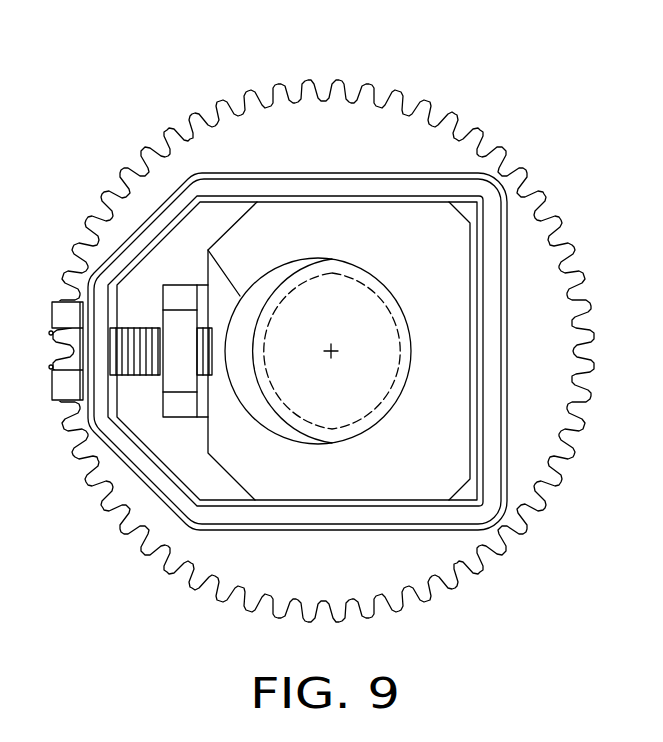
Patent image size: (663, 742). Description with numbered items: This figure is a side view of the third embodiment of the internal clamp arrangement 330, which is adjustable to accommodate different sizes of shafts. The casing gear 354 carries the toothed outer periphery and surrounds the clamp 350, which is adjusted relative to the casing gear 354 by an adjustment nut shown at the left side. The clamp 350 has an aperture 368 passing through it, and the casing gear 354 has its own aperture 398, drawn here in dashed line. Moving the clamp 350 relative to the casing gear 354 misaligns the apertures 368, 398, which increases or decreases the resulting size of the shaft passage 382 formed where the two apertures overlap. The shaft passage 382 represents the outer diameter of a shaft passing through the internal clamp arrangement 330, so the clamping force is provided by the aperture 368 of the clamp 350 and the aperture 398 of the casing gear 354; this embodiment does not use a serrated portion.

The internal clamp arrangement 330 is at (125, 574).
The clamp 350 is at (245, 237).
The casing gear 354 is at (287, 172).
The aperture 368 is at (208, 250).
The shaft passage 382 is at (337, 432).
The aperture 398 is at (298, 272).